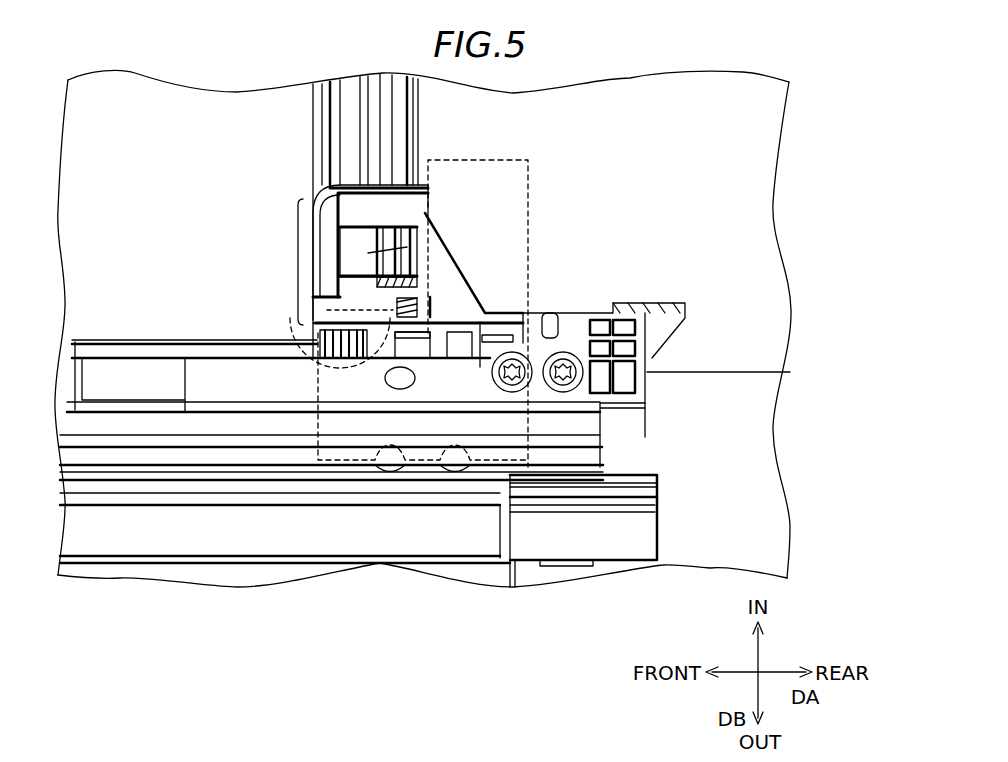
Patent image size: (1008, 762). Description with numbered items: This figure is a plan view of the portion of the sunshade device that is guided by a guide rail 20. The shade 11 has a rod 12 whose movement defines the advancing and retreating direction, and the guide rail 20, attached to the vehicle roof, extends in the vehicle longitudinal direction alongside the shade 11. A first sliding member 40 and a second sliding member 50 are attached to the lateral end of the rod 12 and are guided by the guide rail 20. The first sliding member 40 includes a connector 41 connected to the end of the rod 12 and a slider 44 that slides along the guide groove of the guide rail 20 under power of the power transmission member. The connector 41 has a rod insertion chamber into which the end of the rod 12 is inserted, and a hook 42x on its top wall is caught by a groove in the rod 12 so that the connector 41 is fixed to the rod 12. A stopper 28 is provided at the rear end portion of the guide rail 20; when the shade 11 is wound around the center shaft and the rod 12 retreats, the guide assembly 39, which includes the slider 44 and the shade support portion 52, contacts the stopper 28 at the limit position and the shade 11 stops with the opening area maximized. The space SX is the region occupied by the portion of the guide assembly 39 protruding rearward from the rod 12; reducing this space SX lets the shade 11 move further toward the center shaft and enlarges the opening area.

The shade 11 is at (758, 258).
The rod 12 is at (316, 107).
The guide rail 20 is at (262, 455).
The stopper 28 is at (572, 313).
The guide assembly 39 is at (283, 177).
The first sliding member 40 is at (408, 204).
The connector 41 is at (297, 265).
The hook 42x is at (417, 253).
The slider 44 is at (318, 425).
The second sliding member 50 is at (440, 317).
The shade support portion 52 is at (283, 327).
The space SX is at (477, 160).